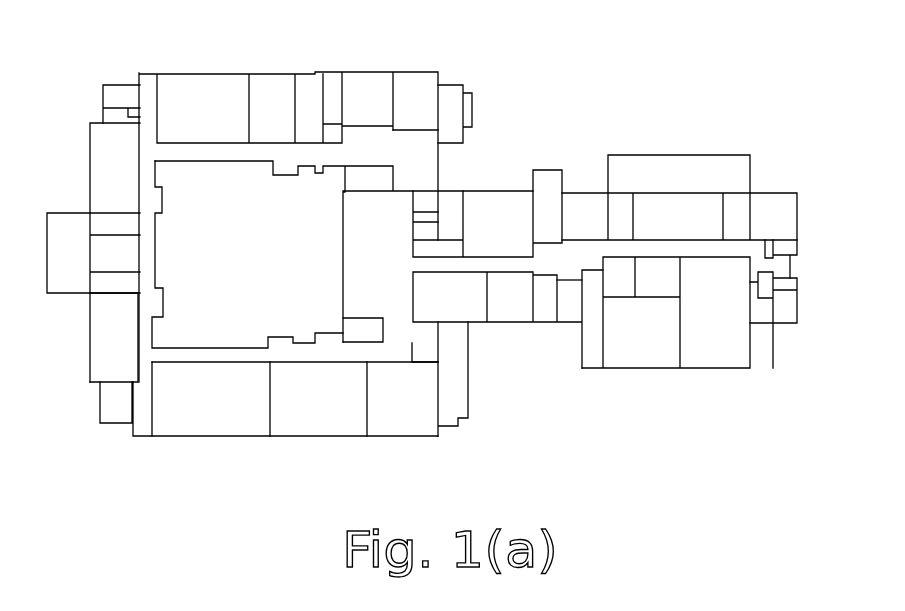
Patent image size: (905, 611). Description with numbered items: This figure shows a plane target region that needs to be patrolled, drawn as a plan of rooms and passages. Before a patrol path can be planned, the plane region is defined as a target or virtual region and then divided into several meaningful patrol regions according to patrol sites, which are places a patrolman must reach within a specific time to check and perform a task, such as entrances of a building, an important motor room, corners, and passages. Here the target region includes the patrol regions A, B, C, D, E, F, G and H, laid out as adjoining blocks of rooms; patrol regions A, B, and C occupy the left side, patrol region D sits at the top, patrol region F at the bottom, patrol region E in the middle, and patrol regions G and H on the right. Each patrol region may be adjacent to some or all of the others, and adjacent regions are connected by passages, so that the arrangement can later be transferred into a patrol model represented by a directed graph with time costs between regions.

The patrol region A is at (142, 113).
The patrol region B is at (68, 232).
The patrol region C is at (102, 335).
The patrol region D is at (427, 88).
The patrol region E is at (470, 300).
The patrol region F is at (395, 400).
The patrol region G is at (637, 347).
The patrol region H is at (773, 207).